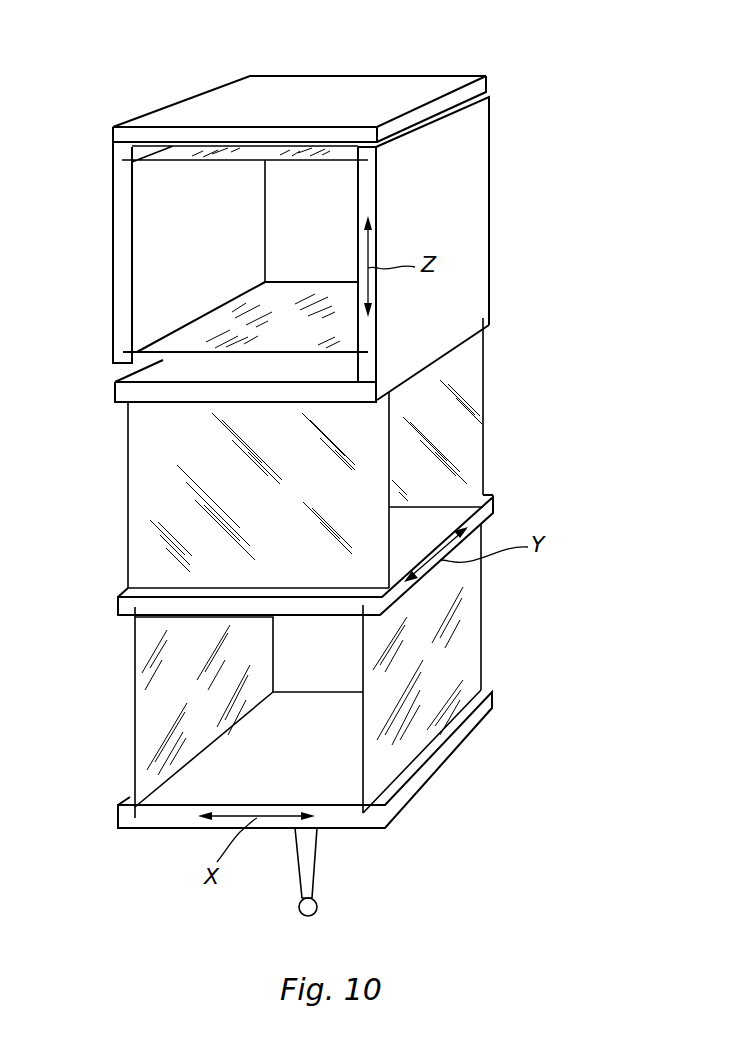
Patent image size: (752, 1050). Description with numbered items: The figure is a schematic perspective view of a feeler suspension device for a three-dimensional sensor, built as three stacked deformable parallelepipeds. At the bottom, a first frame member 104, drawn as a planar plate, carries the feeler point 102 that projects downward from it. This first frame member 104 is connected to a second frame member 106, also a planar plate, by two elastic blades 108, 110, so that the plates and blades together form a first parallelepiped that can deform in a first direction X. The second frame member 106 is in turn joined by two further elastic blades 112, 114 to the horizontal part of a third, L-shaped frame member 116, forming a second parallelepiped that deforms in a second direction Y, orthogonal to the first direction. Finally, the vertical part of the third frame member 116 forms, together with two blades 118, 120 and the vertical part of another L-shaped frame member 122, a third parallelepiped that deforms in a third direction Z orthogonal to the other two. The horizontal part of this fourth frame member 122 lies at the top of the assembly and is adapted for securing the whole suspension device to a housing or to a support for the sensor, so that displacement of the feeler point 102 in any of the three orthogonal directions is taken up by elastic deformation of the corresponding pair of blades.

The feeler point 102 is at (308, 873).
The first frame member 104 is at (445, 755).
The second frame member 106 is at (167, 607).
The elastic blade 108 is at (455, 640).
The elastic blade 110 is at (157, 707).
The elastic blade 112 is at (462, 427).
The elastic blade 114 is at (157, 487).
The third L-shaped frame member 116 is at (470, 215).
The blade 118 is at (195, 337).
The blade 120 is at (240, 152).
The fourth L-shaped frame member 122 is at (382, 90).